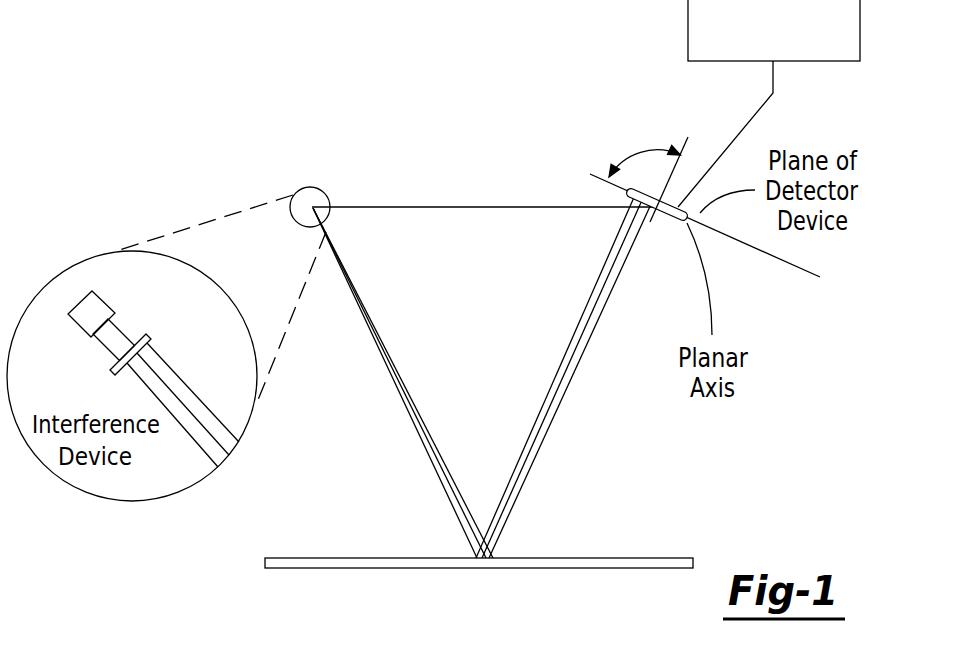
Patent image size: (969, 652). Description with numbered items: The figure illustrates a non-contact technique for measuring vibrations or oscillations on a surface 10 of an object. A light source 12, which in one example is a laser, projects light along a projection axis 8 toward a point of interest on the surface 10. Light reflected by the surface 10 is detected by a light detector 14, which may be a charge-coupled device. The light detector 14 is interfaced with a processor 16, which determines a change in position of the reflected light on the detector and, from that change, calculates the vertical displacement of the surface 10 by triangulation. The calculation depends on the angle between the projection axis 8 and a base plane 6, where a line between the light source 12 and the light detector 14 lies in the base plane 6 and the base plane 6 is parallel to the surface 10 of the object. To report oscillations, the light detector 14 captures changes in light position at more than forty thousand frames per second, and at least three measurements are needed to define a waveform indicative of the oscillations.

The base plane 6 is at (460, 207).
The projection axis 8 is at (392, 362).
The surface 10 is at (365, 558).
The light source 12 is at (82, 331).
The light detector 14 is at (655, 215).
The processor 16 is at (688, 28).